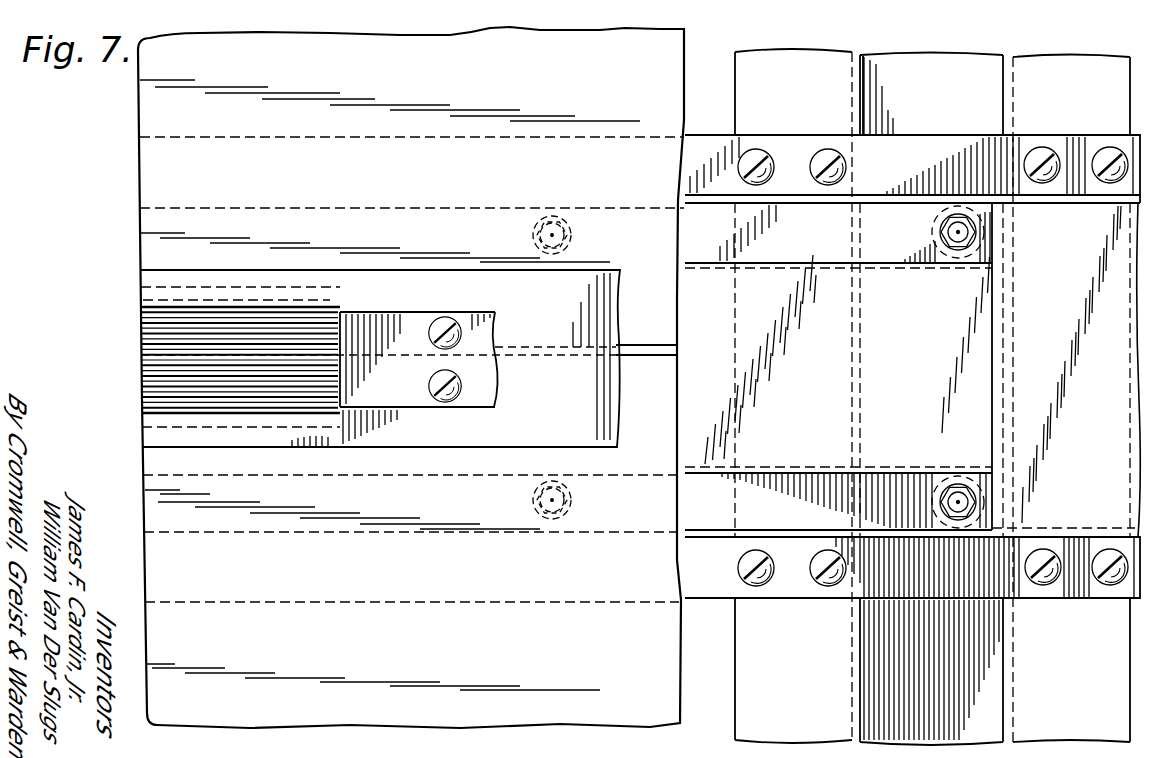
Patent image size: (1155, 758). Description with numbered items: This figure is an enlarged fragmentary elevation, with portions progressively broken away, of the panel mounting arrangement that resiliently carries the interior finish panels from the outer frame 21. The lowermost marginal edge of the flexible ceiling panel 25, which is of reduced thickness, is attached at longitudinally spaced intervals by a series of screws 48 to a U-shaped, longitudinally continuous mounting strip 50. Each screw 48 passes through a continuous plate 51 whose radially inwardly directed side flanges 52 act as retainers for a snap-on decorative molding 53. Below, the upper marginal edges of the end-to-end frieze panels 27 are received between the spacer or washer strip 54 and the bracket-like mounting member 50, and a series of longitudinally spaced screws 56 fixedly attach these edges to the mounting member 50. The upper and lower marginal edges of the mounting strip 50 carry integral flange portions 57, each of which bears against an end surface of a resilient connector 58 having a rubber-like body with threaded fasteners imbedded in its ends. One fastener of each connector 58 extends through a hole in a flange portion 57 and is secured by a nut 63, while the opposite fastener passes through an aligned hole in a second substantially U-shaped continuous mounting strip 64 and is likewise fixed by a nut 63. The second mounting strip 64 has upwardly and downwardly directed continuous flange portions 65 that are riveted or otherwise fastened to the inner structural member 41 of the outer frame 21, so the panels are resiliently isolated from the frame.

The outer frame 21 is at (934, 66).
The ceiling panel 25 is at (428, 92).
The frieze panels 27 is at (465, 587).
The structural member 41 is at (797, 67).
The screws 48 is at (447, 322).
The mounting strip 50 is at (920, 372).
The continuous plate 51 is at (410, 382).
The side flanges 52 is at (385, 312).
The snap-on decorative molding 53 is at (210, 305).
The spacer or washer strip 54 is at (358, 275).
The screws 56 is at (441, 401).
The flange portions 57 is at (883, 222).
The resilient connector 58 is at (575, 236).
The nut 63 is at (945, 236).
The second mounting strip 64 is at (1108, 380).
The flange portions 65 is at (1068, 143).